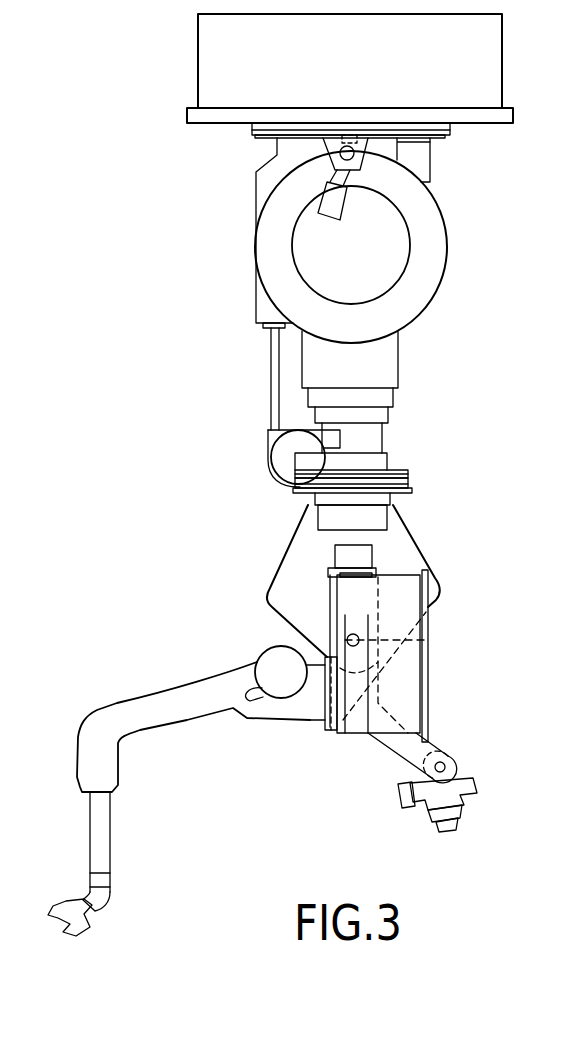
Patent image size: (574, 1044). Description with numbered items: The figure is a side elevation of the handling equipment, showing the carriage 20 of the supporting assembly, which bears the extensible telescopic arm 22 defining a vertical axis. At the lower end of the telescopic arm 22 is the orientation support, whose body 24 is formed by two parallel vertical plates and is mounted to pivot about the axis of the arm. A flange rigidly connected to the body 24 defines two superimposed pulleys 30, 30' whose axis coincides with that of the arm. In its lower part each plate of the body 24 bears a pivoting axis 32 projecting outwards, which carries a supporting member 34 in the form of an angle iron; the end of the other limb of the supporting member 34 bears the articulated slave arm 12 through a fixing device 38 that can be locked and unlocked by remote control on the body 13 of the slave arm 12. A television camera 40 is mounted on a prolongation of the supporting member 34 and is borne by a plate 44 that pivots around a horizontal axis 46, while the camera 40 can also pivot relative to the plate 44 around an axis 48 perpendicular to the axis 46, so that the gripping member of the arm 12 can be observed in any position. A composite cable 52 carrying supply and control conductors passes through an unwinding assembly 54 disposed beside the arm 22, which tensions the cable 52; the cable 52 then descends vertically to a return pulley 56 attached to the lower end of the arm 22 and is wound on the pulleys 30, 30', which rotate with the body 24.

The articulated slave arm 12 is at (138, 805).
The body of the slave arm 13 is at (415, 690).
The carriage 20 is at (332, 86).
The telescopic arm 22 is at (402, 353).
The body 24 is at (430, 547).
The pulley 30 is at (382, 457).
The pulley 30' is at (382, 481).
The pivoting axis 32 is at (428, 640).
The supporting member 34 is at (337, 573).
The fixing device 38 is at (343, 553).
The television camera 40 is at (410, 807).
The plate 44 is at (455, 773).
The axis 46 is at (437, 765).
The axis 48 is at (452, 823).
The composite cable 52 is at (270, 383).
The unwinding assembly 54 is at (275, 305).
The return pulley 56 is at (285, 462).